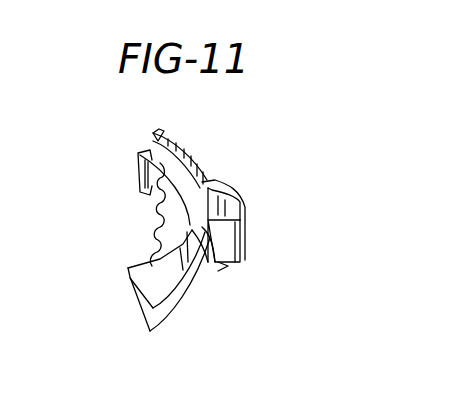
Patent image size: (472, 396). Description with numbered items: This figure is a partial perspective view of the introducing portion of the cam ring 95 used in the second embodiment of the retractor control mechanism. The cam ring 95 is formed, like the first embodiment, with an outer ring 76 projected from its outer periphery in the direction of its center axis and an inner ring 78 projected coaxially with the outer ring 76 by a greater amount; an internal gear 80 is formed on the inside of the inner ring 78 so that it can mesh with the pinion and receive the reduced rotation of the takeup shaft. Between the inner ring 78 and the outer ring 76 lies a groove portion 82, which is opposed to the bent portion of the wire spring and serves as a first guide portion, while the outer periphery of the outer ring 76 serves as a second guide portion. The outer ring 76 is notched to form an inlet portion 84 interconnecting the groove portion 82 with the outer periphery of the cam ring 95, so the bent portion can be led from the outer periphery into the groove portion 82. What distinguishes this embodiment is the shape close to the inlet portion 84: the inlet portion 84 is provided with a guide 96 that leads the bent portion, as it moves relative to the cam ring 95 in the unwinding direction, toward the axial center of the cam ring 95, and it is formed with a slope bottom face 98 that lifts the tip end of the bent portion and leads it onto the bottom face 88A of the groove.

The outer ring 76 is at (195, 163).
The inner ring 78 is at (150, 186).
The internal gear 80 is at (158, 198).
The groove portion 82 is at (152, 150).
The inlet portion 84 is at (232, 198).
The bottom face 88A is at (180, 275).
The cam ring 95 is at (173, 327).
The guide 96 is at (248, 235).
The slope bottom face 98 is at (223, 262).